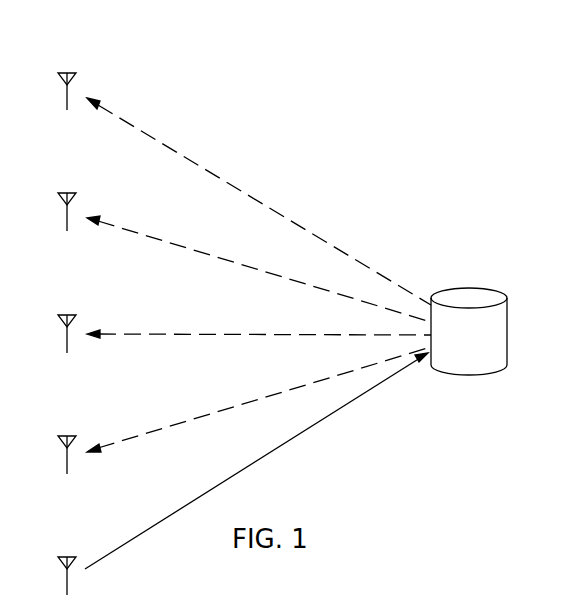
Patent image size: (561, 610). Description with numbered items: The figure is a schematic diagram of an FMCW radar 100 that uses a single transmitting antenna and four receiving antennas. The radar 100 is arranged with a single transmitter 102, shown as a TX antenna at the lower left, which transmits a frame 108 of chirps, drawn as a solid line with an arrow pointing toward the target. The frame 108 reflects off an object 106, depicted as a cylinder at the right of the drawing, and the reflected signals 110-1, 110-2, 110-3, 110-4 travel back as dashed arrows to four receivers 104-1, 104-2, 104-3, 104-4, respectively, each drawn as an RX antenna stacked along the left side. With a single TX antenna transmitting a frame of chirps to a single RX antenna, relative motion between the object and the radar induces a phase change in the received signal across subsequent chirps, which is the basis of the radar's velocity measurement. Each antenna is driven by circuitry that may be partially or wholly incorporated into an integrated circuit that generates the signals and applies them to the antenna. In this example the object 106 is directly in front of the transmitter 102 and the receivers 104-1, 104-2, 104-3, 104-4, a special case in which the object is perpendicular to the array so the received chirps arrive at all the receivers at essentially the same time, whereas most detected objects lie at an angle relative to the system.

The FMCW radar 100 is at (378, 145).
The transmitter 102 is at (62, 557).
The receiver 104-1 is at (62, 73).
The receiver 104-2 is at (62, 193).
The receiver 104-3 is at (62, 315).
The receiver 104-4 is at (62, 436).
The object 106 is at (467, 288).
The frame 108 is at (263, 459).
The reflected signal 110-1 is at (275, 189).
The reflected signal 110-2 is at (185, 223).
The reflected signal 110-3 is at (220, 333).
The reflected signal 110-4 is at (173, 426).